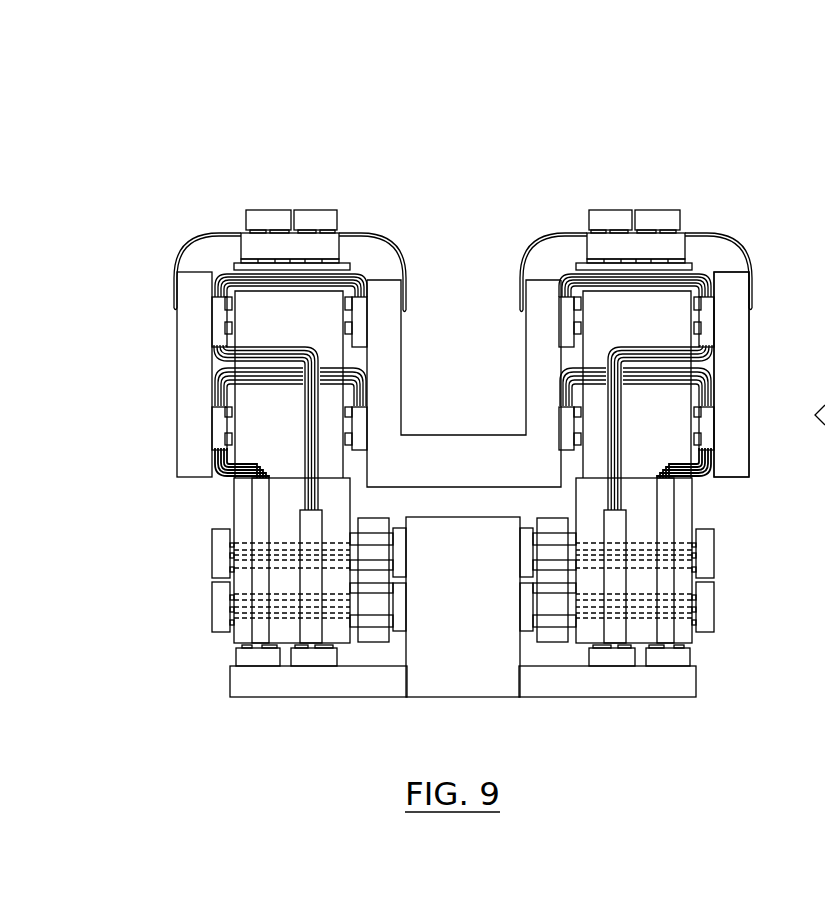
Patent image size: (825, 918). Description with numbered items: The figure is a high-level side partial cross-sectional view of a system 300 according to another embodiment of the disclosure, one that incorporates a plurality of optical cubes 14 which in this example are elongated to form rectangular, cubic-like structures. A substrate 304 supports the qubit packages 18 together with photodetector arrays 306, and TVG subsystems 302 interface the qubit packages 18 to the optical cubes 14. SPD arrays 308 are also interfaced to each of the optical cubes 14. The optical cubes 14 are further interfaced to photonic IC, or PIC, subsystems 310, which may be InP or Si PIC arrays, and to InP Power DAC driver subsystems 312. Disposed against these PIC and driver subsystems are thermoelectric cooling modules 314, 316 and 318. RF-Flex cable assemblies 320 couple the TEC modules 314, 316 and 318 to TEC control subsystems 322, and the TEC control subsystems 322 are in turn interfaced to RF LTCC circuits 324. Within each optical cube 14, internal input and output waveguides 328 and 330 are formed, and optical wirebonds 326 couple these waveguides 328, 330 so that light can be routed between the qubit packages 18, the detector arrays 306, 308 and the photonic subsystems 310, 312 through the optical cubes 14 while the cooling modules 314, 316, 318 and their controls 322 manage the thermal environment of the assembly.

The system 300 is at (553, 119).
The TVG subsystem 302 is at (544, 520).
The substrate 304 is at (477, 562).
The photodetector array 306 is at (258, 657).
The SPD array 308 is at (210, 588).
The photonic IC subsystem 310 is at (220, 326).
The InP Power DAC driver subsystem 312 is at (565, 423).
The thermoelectric cooling module 314 is at (203, 468).
The thermoelectric cooling module 316 is at (477, 474).
The thermoelectric cooling module 318 is at (728, 304).
The RF-Flex cable assembly 320 is at (390, 250).
The TEC control subsystem 322 is at (288, 195).
The RF LTCC circuit 324 is at (257, 248).
The optical wirebond 326 is at (221, 273).
The internal input waveguide 328 is at (258, 484).
The internal output waveguide 330 is at (303, 515).
The optical cube 14 is at (243, 510).
The qubit package 18 is at (527, 567).